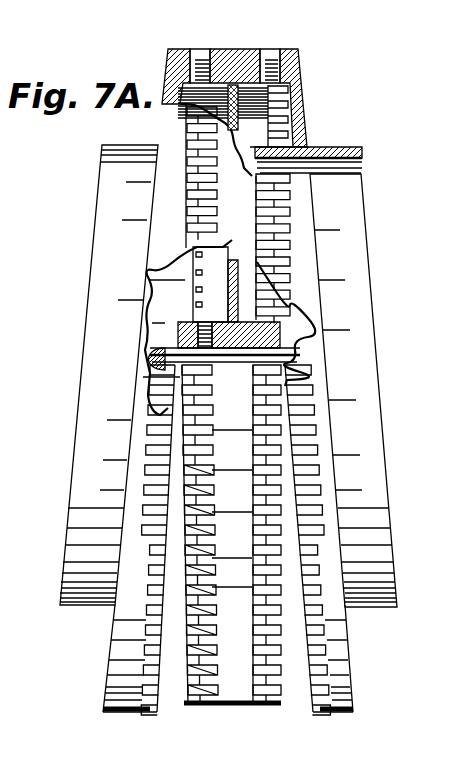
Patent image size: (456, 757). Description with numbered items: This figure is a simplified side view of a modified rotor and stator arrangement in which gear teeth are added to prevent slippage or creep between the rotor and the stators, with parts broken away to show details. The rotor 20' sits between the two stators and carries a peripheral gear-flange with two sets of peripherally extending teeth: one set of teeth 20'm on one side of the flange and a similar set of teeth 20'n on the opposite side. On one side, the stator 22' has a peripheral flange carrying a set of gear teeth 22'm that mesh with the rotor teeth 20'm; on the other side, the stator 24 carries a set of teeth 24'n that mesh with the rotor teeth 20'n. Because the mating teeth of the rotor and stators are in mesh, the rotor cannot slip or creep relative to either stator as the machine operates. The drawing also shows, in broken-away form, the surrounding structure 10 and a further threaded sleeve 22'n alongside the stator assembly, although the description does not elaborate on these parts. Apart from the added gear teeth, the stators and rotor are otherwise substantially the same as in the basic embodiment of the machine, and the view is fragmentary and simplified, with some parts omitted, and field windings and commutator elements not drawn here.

The housing / frame 10 is at (143, 363).
The stator 24 is at (163, 63).
The stator gear teeth 24'n is at (166, 59).
The rotor 20' is at (269, 72).
The rotor gear teeth 20'n is at (220, 375).
The rotor gear teeth 20'm is at (276, 380).
The stator 22' is at (353, 453).
The threaded sleeve (n) 22'n is at (144, 441).
The stator gear teeth 22'm is at (314, 393).